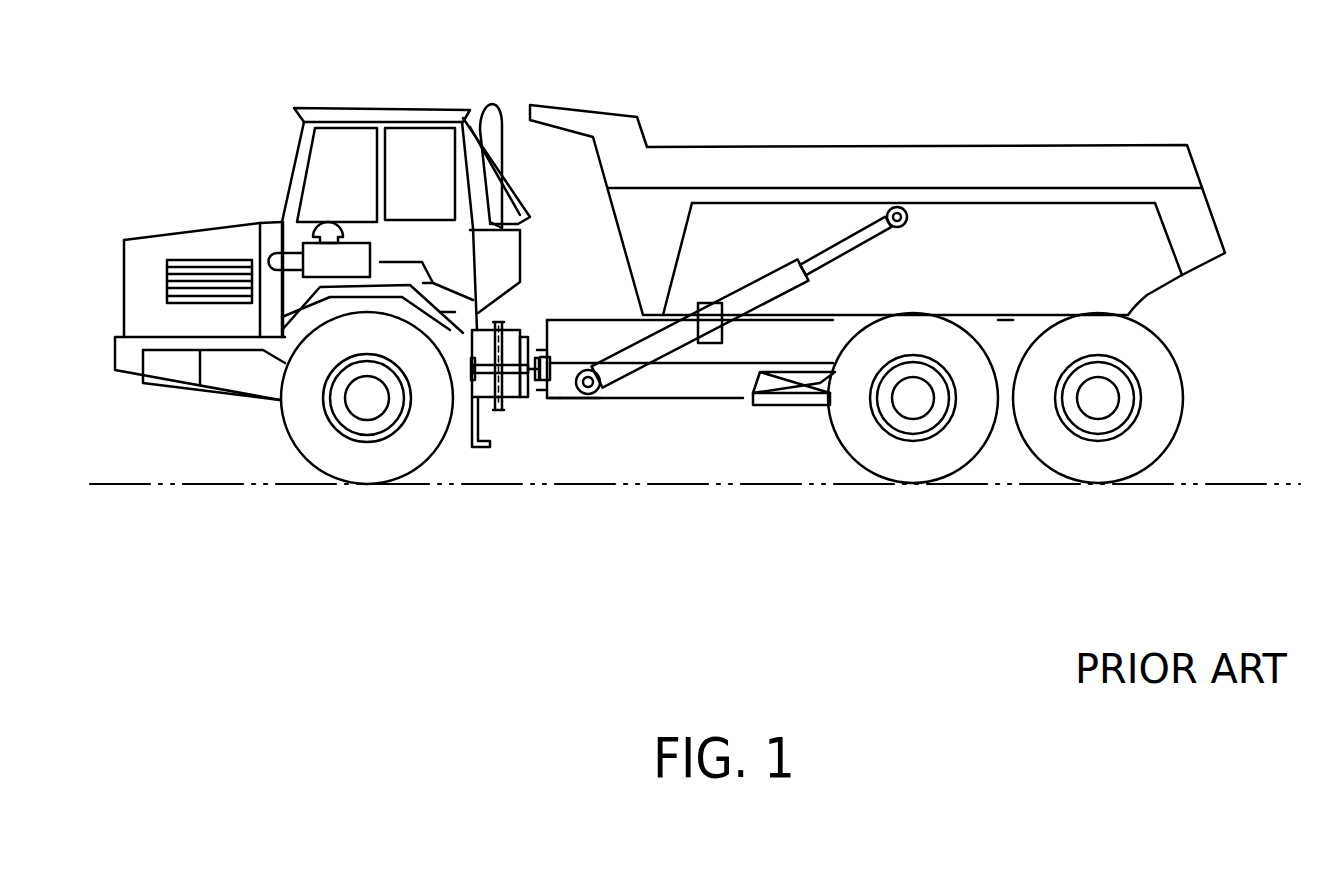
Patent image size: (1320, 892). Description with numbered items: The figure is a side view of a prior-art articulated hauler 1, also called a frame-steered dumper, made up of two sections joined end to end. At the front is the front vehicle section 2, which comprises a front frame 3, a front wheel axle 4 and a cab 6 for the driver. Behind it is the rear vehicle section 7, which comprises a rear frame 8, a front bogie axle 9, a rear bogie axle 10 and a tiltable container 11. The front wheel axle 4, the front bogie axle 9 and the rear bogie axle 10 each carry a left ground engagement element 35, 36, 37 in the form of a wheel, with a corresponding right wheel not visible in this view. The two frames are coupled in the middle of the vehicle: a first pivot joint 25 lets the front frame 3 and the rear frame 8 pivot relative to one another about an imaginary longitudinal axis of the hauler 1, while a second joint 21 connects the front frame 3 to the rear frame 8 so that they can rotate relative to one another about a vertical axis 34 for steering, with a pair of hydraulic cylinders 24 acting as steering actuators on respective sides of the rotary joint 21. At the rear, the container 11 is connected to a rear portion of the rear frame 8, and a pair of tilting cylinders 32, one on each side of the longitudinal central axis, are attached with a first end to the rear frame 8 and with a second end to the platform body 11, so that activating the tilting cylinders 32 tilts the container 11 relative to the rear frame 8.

The articulated hauler 1 is at (796, 67).
The front vehicle section 2 is at (401, 57).
The front frame 3 is at (477, 397).
The front wheel axle 4 is at (367, 398).
The cab 6 is at (441, 109).
The rear vehicle section 7 is at (1005, 101).
The rear frame 8 is at (663, 383).
The front bogie axle 9 is at (913, 398).
The rear bogie axle 10 is at (1098, 398).
The tiltable container 11 is at (1185, 217).
The second joint 21 is at (533, 445).
The hydraulic cylinders 24 is at (550, 400).
The first pivot joint 25 is at (585, 430).
The tilting cylinders 32 is at (663, 340).
The vertical axis 34 is at (518, 367).
The left ground engagement element 35 is at (300, 425).
The left ground engagement element 36 is at (975, 440).
The left ground engagement element 37 is at (1153, 443).